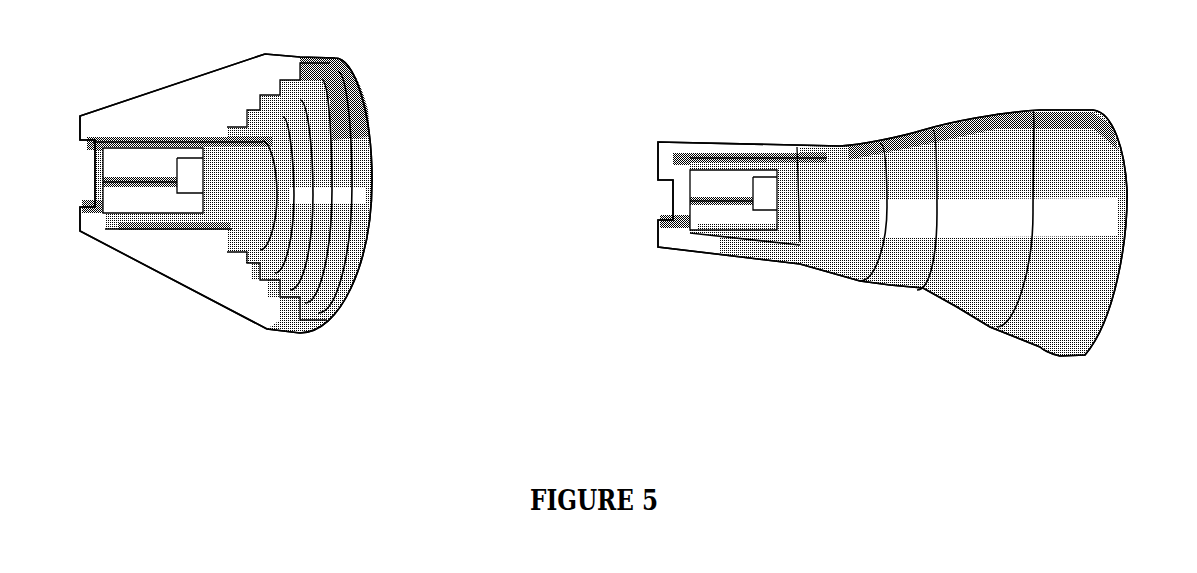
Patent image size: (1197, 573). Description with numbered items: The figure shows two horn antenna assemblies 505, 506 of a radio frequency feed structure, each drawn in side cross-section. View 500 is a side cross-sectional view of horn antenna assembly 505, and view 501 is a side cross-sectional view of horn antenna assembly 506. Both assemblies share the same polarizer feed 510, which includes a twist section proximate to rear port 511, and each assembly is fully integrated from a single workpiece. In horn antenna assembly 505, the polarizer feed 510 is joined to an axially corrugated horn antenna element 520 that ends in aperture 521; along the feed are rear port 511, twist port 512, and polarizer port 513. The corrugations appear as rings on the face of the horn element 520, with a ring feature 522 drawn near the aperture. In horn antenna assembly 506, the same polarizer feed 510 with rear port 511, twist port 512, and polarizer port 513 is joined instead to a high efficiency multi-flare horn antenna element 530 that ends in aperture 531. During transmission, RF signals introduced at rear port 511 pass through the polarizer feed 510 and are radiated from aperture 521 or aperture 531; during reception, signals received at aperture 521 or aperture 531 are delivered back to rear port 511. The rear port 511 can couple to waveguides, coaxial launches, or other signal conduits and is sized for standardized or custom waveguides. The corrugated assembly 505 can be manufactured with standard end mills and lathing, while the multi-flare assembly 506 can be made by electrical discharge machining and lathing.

The view 500 is at (70, 65).
The view 501 is at (650, 63).
The horn antenna assembly 505 is at (214, 45).
The horn antenna assembly 506 is at (907, 106).
The polarizer feed 510 is at (470, 233).
The rear port 511 is at (82, 188).
The twist port 512 is at (114, 156).
The polarizer port 513 is at (229, 226).
The axially corrugated horn antenna element 520 is at (314, 222).
The aperture 521 is at (360, 221).
The rib 522 is at (342, 94).
The high efficiency multi-flare horn antenna element 530 is at (795, 374).
The aperture 531 is at (1116, 242).